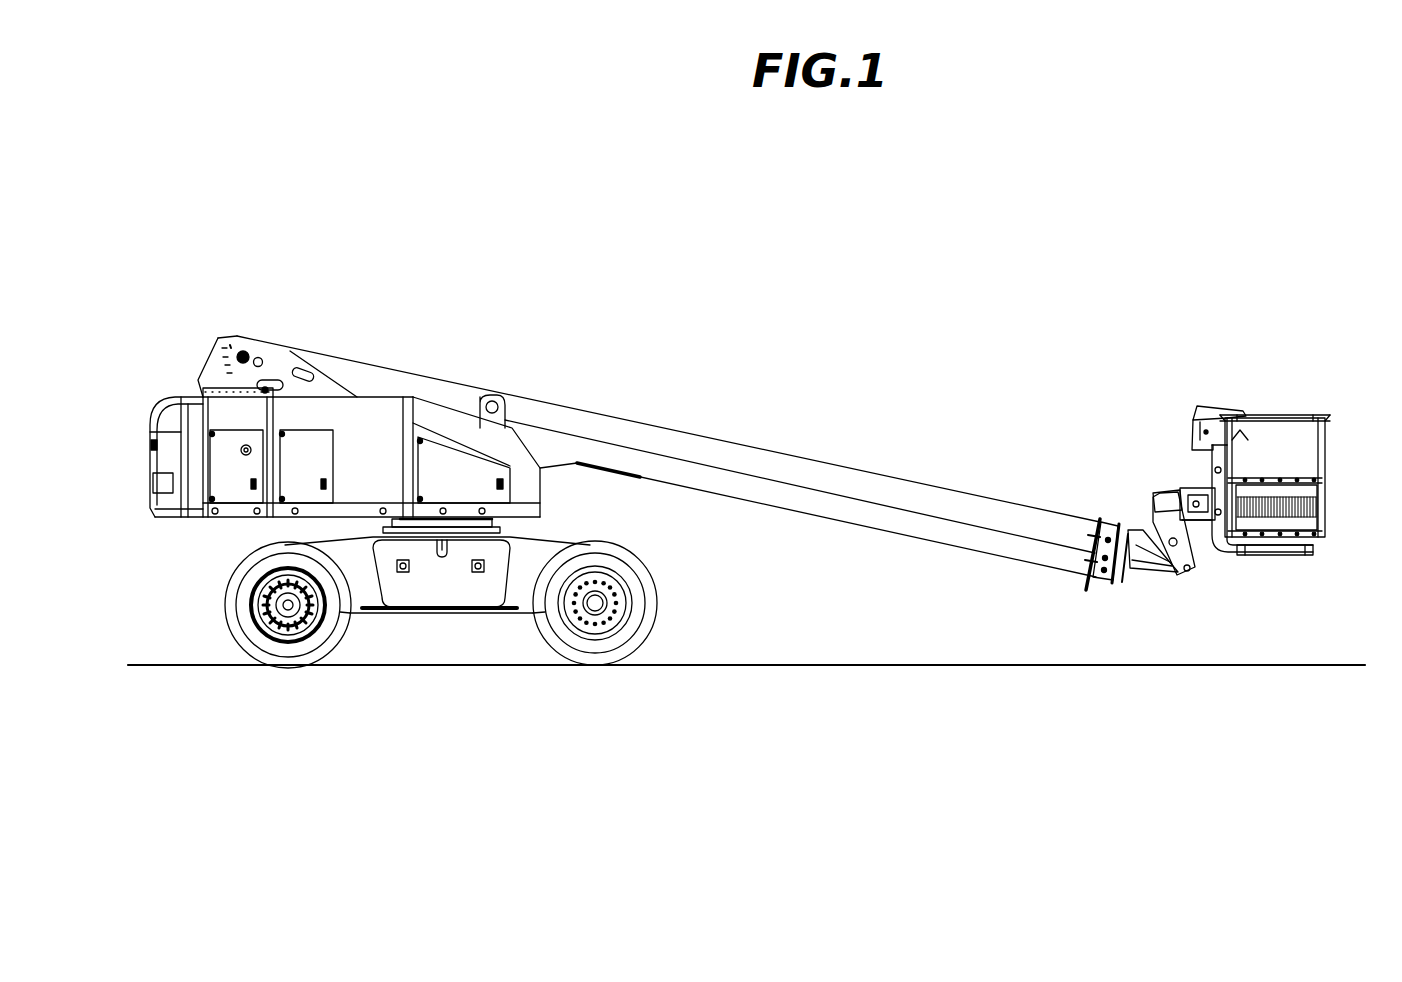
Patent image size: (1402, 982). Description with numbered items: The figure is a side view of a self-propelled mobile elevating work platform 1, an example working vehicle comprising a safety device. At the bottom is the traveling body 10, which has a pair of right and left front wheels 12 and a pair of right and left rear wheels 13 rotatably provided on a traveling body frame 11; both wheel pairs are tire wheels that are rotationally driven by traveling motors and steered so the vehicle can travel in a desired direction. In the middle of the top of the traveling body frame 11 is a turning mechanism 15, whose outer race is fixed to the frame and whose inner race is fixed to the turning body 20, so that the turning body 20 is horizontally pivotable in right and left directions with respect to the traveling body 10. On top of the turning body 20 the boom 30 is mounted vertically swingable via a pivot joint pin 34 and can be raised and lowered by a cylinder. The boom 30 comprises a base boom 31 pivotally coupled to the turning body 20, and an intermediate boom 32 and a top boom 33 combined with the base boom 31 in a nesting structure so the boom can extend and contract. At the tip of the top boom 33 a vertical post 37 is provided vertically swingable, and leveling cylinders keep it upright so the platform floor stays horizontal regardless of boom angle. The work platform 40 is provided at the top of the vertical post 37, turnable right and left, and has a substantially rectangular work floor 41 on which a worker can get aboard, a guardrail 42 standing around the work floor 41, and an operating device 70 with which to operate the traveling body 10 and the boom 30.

The mobile elevating work platform 1 is at (552, 232).
The traveling body 10 is at (208, 608).
The traveling body frame 11 is at (442, 613).
The front wheels 12 is at (595, 650).
The rear wheels 13 is at (287, 650).
The turning mechanism 15 is at (497, 524).
The turning body 20 is at (144, 466).
The boom 30 is at (613, 411).
The base boom 31 is at (893, 490).
The intermediate boom 32 is at (1106, 528).
The top boom 33 is at (1133, 578).
The pivot joint pin 34 is at (244, 352).
The vertical post 37 is at (1162, 495).
The work platform 40 is at (1304, 413).
The work floor 41 is at (1298, 556).
The guardrail 42 is at (1326, 446).
The operating device 70 is at (1206, 410).